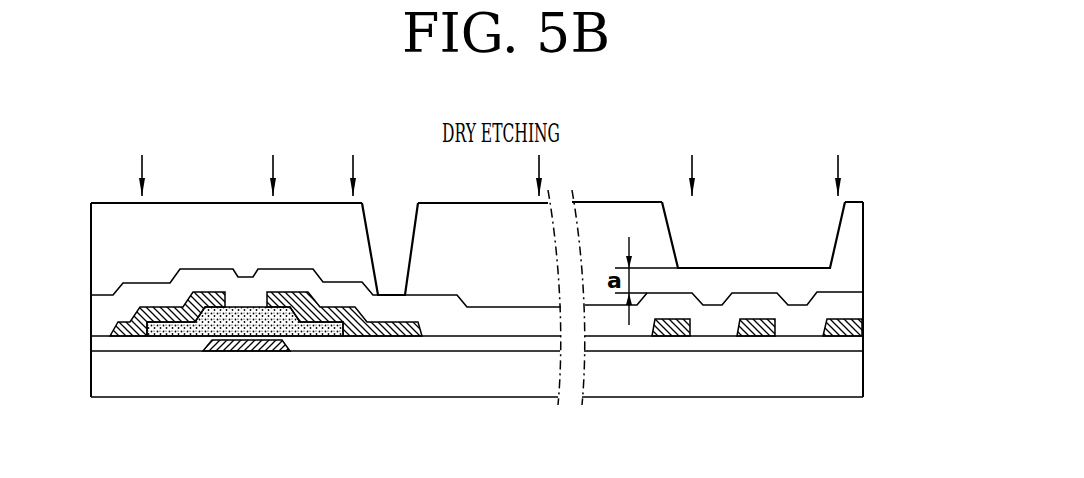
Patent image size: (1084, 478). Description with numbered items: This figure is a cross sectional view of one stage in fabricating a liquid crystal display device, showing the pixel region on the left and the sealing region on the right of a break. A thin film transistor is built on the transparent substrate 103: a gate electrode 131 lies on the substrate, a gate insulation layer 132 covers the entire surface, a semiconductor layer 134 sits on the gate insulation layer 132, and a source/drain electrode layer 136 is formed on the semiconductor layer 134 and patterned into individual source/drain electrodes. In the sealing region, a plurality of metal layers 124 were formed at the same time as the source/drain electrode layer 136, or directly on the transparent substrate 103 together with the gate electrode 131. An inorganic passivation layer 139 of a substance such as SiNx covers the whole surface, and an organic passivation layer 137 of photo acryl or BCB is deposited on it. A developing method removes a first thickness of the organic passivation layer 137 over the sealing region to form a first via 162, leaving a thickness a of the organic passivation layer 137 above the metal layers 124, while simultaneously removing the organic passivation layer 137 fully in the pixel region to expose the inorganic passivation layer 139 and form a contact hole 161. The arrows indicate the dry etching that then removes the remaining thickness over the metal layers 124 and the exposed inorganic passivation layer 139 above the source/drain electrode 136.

The transparent substrate 103 is at (860, 382).
The metal layer 124 is at (860, 327).
The gate electrode 131 is at (247, 353).
The gate insulation layer 132 is at (858, 343).
The semiconductor layer 134 is at (323, 338).
The source/drain electrode layer 136 is at (393, 338).
The organic passivation layer 137 is at (860, 232).
The inorganic passivation layer 139 is at (860, 298).
The contact hole 161 is at (393, 236).
The first via 162 is at (762, 236).